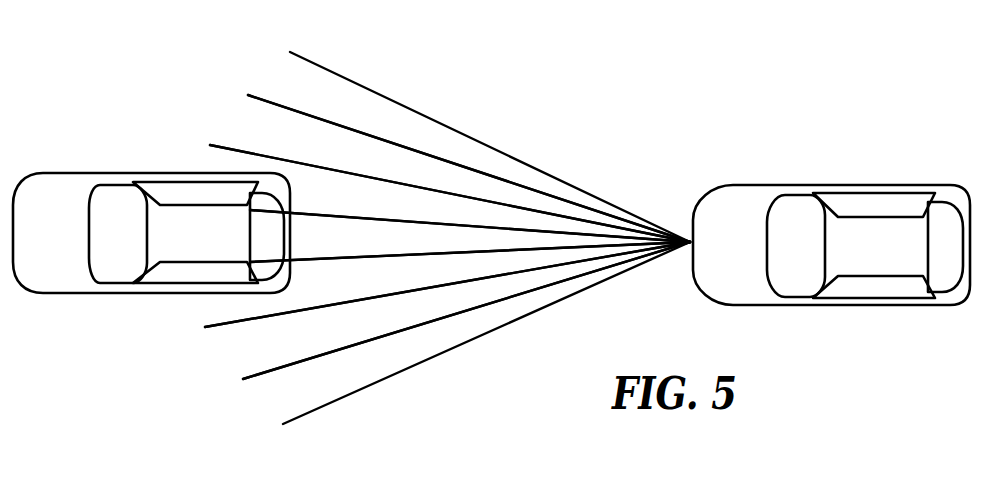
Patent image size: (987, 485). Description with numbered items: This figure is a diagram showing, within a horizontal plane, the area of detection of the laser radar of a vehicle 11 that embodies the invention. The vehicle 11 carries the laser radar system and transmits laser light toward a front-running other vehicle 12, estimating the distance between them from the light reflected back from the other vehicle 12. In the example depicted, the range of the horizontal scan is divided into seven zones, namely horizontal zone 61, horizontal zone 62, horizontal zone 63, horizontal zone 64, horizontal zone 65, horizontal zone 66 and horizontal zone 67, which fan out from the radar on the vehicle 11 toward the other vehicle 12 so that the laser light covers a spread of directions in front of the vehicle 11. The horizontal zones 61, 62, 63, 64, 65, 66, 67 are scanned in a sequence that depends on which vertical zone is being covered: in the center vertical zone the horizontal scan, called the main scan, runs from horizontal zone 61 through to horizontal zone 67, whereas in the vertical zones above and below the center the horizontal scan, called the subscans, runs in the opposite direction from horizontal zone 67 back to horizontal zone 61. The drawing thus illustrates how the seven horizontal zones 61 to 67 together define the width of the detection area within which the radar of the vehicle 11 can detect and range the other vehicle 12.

The vehicle 11 is at (840, 185).
The other vehicle 12 is at (108, 173).
The horizontal zone 61 is at (466, 333).
The horizontal zone 62 is at (447, 310).
The horizontal zone 63 is at (447, 284).
The horizontal zone 64 is at (470, 236).
The horizontal zone 65 is at (450, 193).
The horizontal zone 66 is at (450, 168).
The horizontal zone 67 is at (469, 147).